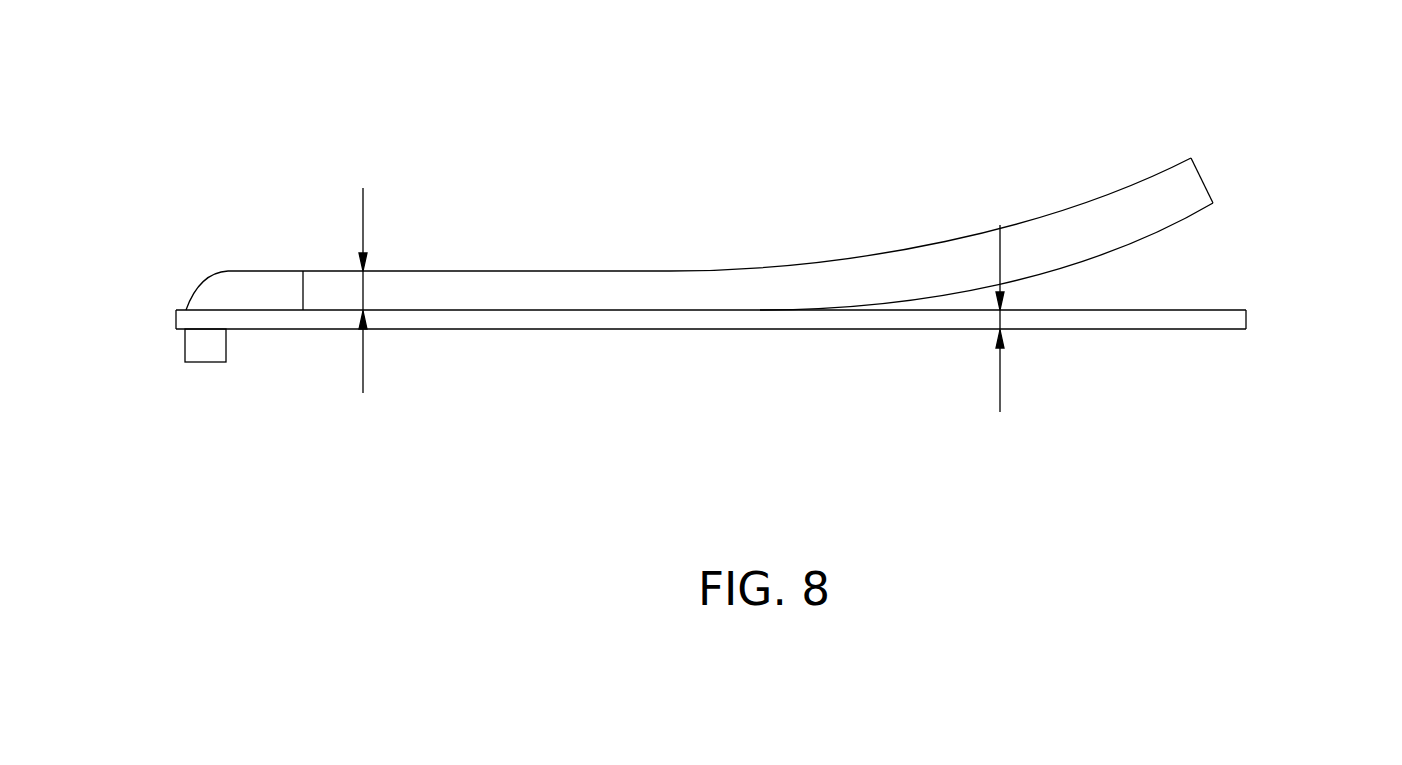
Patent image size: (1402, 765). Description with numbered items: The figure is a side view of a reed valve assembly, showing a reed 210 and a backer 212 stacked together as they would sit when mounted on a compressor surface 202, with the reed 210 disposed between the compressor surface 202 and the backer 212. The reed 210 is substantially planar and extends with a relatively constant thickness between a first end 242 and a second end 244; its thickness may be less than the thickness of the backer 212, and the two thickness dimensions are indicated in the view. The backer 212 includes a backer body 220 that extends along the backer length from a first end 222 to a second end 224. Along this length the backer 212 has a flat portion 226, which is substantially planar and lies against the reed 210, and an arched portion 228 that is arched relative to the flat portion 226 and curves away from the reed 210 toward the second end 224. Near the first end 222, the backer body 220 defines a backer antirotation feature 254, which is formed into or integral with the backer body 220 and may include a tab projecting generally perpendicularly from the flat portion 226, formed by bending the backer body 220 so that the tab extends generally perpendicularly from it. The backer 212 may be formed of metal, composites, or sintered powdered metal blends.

The compressor surface 202 is at (644, 110).
The reed 210 is at (517, 312).
The backer 212 is at (817, 263).
The backer body 220 is at (612, 288).
The first end 222 is at (189, 265).
The second end 224 is at (1218, 162).
The flat portion 226 is at (498, 255).
The arched portion 228 is at (1061, 195).
The first end 242 is at (150, 316).
The second end 244 is at (1268, 319).
The backer antirotation feature 254 is at (204, 350).